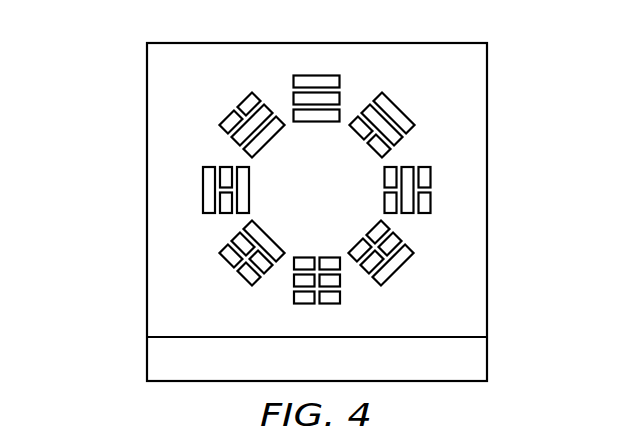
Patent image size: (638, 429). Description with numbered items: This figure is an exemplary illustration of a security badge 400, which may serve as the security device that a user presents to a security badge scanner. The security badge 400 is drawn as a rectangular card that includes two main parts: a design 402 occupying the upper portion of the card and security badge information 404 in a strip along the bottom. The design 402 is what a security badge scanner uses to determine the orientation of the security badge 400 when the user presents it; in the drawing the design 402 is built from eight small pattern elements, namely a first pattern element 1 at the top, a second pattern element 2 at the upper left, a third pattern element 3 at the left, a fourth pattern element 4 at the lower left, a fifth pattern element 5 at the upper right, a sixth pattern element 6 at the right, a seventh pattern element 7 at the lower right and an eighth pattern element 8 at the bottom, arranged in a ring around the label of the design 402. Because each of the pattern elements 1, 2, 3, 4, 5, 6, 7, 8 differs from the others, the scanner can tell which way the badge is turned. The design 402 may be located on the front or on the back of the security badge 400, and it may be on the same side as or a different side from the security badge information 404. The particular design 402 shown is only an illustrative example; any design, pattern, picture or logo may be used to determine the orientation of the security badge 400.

The security badge 400 is at (140, 150).
The design 402 is at (338, 206).
The security badge information 404 is at (147, 359).
The first symbol pattern (top) 1 is at (317, 84).
The second symbol pattern (upper left) 2 is at (251, 122).
The third symbol pattern (left) 3 is at (214, 190).
The fourth symbol pattern (lower left) 4 is at (251, 256).
The fifth symbol pattern (upper right) 5 is at (383, 121).
The sixth symbol pattern (right) 6 is at (420, 190).
The seventh symbol pattern (lower right) 7 is at (382, 256).
The eighth symbol pattern (bottom) 8 is at (317, 296).